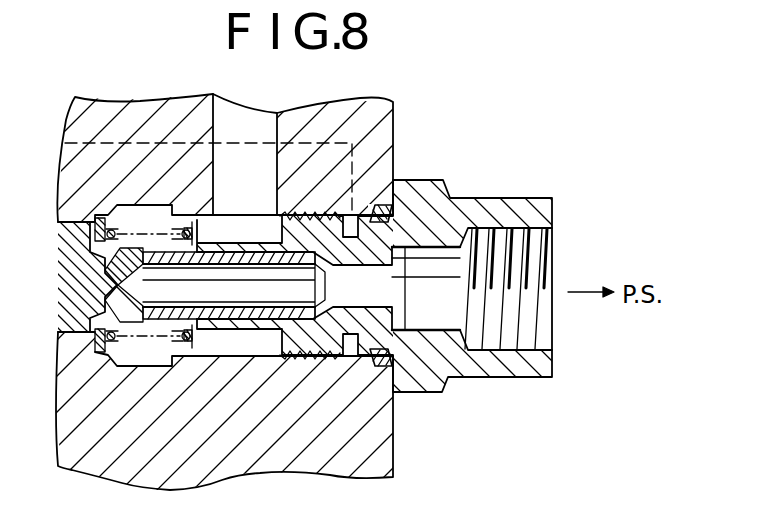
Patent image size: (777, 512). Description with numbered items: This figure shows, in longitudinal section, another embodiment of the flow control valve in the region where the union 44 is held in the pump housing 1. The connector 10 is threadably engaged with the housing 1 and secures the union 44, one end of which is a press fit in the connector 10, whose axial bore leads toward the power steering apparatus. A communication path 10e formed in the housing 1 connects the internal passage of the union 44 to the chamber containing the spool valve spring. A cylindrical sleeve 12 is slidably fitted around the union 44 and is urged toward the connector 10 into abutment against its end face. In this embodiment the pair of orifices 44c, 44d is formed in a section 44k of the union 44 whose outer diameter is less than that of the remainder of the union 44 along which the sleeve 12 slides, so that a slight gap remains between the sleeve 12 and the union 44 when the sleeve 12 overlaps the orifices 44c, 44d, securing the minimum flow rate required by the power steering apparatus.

The pump housing 1 is at (381, 135).
The connector 10 is at (480, 206).
The communication path 10e is at (167, 143).
The cylindrical sleeve 12 is at (261, 357).
The union 44 is at (214, 320).
The orifice 44c is at (157, 360).
The orifice 44d is at (183, 235).
The section of the union 44k is at (132, 355).